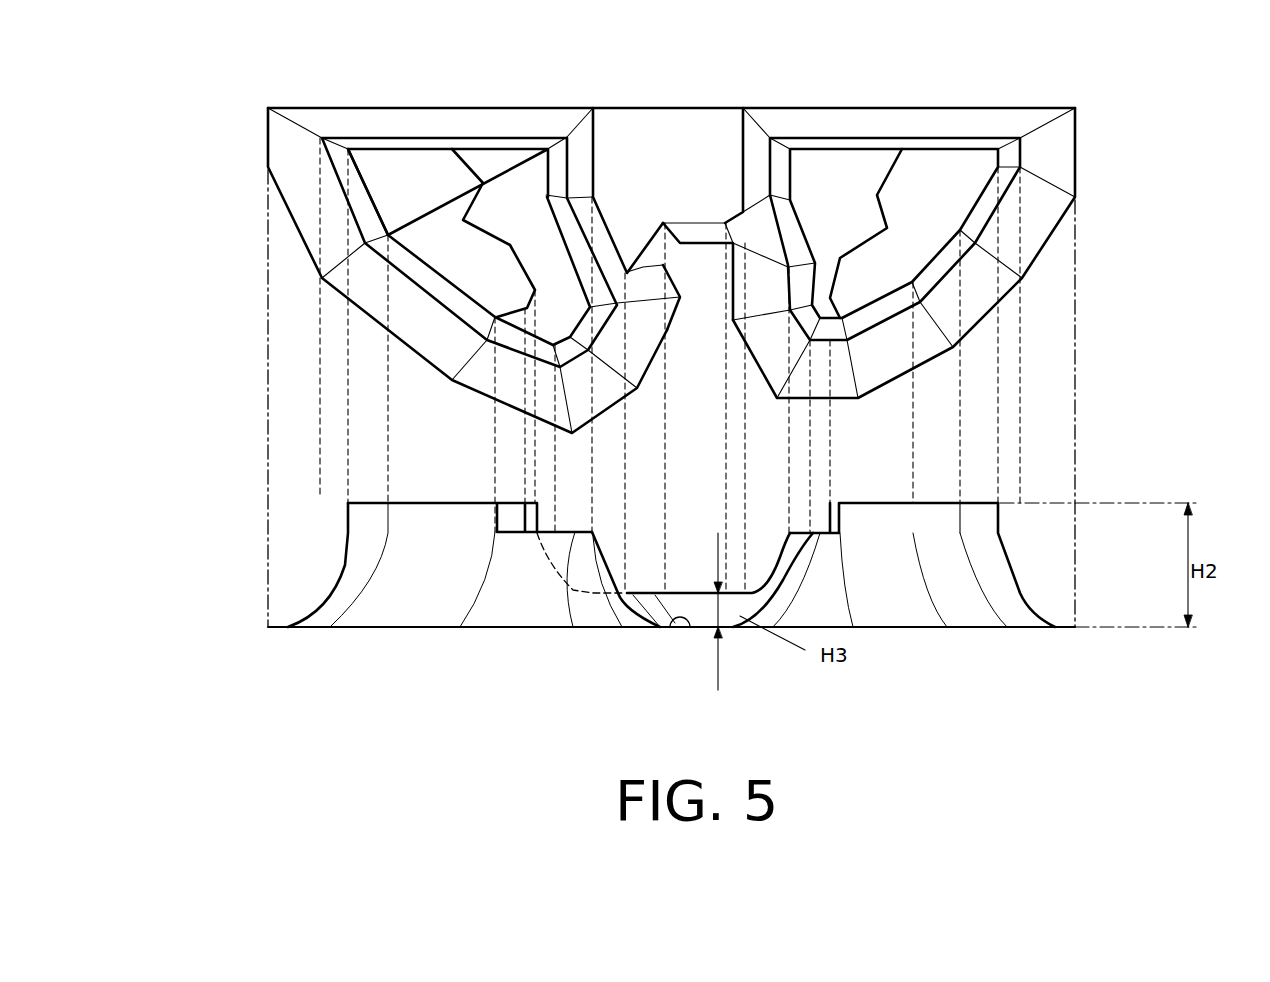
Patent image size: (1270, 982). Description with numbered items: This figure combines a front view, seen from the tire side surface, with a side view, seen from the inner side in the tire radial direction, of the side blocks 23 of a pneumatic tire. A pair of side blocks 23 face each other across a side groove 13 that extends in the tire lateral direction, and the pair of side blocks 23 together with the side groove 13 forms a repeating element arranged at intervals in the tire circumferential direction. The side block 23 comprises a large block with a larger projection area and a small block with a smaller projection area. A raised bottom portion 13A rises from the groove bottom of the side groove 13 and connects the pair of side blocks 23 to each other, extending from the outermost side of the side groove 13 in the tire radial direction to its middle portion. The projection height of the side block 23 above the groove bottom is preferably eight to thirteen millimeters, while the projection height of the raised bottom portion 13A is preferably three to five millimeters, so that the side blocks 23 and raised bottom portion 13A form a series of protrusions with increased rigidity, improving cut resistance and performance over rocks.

The side groove 13 is at (700, 262).
The raised bottom portion 13A is at (665, 133).
The side block 23 is at (360, 214).